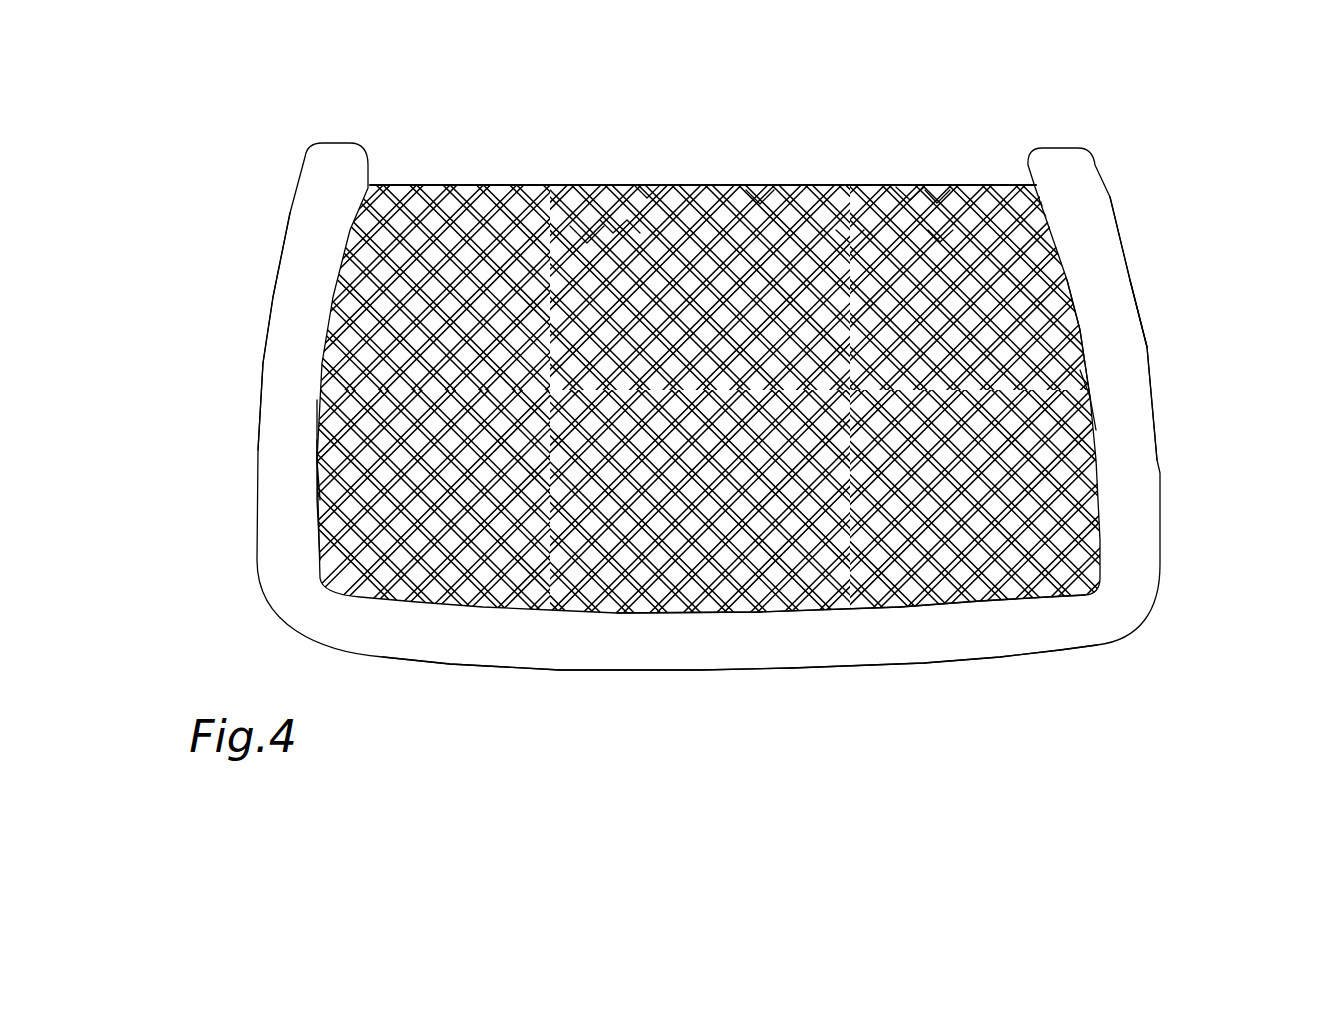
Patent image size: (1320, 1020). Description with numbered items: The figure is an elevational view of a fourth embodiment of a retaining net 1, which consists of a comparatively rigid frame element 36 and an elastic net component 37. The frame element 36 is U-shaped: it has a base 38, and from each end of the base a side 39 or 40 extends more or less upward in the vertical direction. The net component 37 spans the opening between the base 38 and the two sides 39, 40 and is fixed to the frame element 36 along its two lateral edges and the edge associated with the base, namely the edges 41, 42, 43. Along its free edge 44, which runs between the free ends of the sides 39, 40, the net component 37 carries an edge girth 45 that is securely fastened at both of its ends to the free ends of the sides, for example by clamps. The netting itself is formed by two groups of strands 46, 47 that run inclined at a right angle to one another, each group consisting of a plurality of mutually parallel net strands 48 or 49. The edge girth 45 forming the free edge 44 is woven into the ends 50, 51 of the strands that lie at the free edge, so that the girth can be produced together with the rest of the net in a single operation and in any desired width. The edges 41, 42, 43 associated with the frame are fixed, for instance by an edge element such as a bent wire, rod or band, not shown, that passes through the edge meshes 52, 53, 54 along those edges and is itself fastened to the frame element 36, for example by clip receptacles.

The retaining net 1 is at (714, 432).
The frame element 36 is at (1104, 650).
The net component 37 is at (663, 467).
The base 38 is at (792, 640).
The side 39 is at (1122, 375).
The side 40 is at (277, 378).
The edge 41 is at (1093, 310).
The edge 42 is at (703, 613).
The edge 43 is at (317, 435).
The free edge 44 is at (703, 183).
The edge girth 45 is at (910, 187).
The group of strands 46 is at (587, 243).
The group of strands 47 is at (850, 243).
The net strands 48 is at (640, 233).
The net strands 49 is at (940, 230).
The strand ends 50 is at (647, 190).
The strand ends 51 is at (760, 190).
The edge meshes 52 is at (1088, 395).
The edge meshes 53 is at (1015, 587).
The edge meshes 54 is at (322, 467).